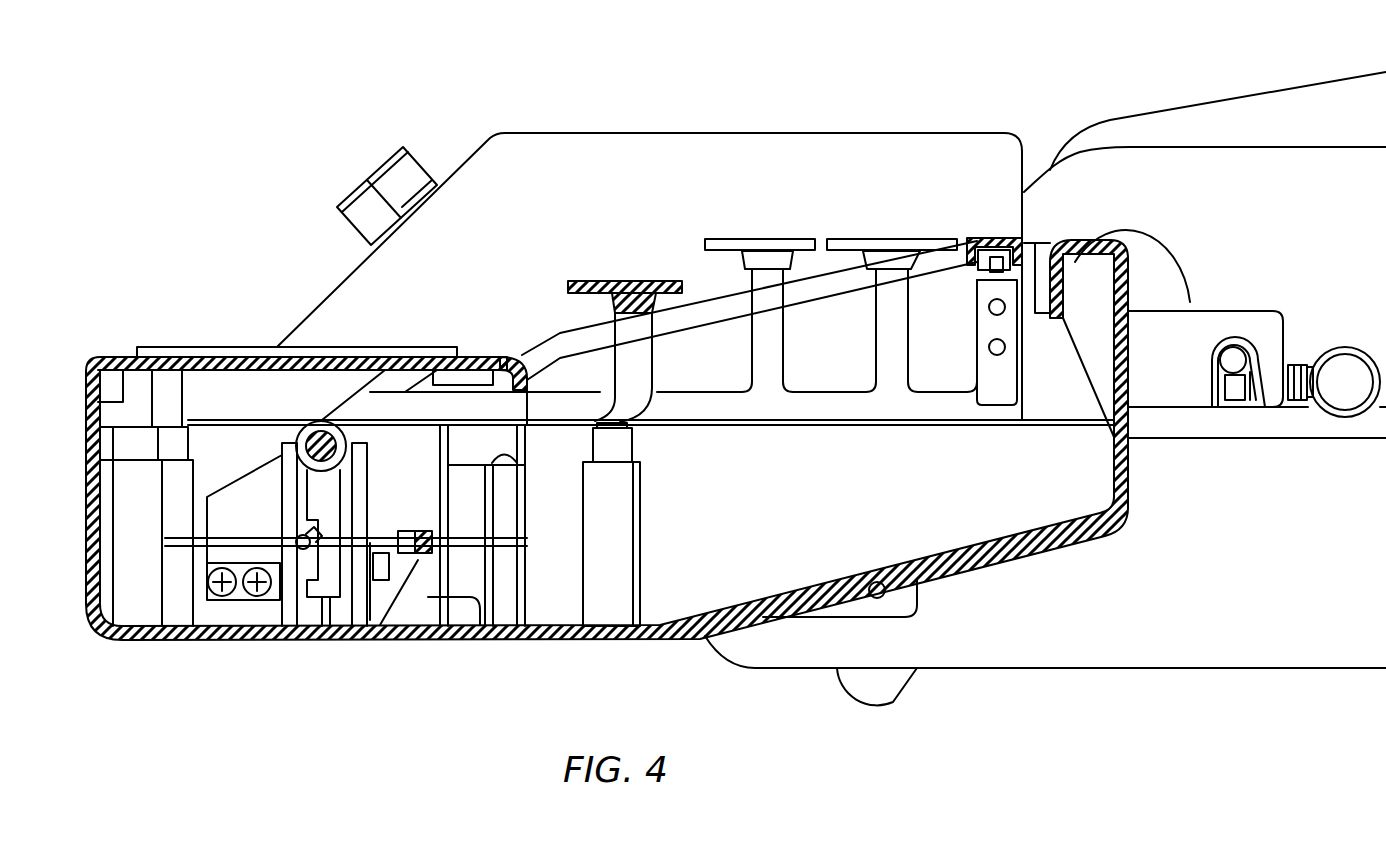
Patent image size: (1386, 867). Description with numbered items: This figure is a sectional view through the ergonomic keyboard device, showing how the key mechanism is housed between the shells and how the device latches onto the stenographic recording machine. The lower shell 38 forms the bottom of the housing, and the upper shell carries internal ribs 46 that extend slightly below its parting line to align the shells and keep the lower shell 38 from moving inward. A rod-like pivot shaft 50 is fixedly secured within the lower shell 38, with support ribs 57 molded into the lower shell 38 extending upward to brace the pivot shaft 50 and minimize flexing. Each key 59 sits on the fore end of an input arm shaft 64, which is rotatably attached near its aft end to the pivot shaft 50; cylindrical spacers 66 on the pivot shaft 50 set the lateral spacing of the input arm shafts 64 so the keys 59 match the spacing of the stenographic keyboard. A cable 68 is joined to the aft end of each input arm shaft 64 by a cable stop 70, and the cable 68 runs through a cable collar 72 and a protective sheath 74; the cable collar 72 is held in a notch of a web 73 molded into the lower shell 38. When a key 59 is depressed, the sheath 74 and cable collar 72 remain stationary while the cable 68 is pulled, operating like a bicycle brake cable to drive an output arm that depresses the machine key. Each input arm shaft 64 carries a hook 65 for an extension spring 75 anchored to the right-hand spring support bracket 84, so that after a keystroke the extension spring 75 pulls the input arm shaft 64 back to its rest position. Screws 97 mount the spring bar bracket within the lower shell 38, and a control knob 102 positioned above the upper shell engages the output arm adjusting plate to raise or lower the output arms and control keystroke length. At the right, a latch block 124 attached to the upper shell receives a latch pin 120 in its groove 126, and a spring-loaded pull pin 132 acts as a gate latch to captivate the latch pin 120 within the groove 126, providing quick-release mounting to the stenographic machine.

The lower shell 38 is at (140, 641).
The internal ribs 46 is at (103, 418).
The pivot shaft 50 is at (330, 425).
The support ribs 57 is at (293, 467).
The keys 59 is at (703, 242).
The input arm shaft 64 is at (762, 356).
The hook 65 is at (527, 398).
The cylindrical spacers 66 is at (313, 432).
The cable 68 is at (357, 580).
The cable stop 70 is at (302, 550).
The cable collar 72 is at (408, 532).
The web 73 is at (478, 620).
The sheath 74 is at (470, 545).
The extension spring 75 is at (502, 372).
The right-hand spring support bracket 84 is at (492, 368).
The screws 97 is at (224, 622).
The control knob 102 is at (408, 170).
The latch pin 120 is at (1230, 359).
The latch block 124 is at (1252, 318).
The groove 126 is at (1235, 401).
The spring-loaded pull pin 132 is at (1345, 417).